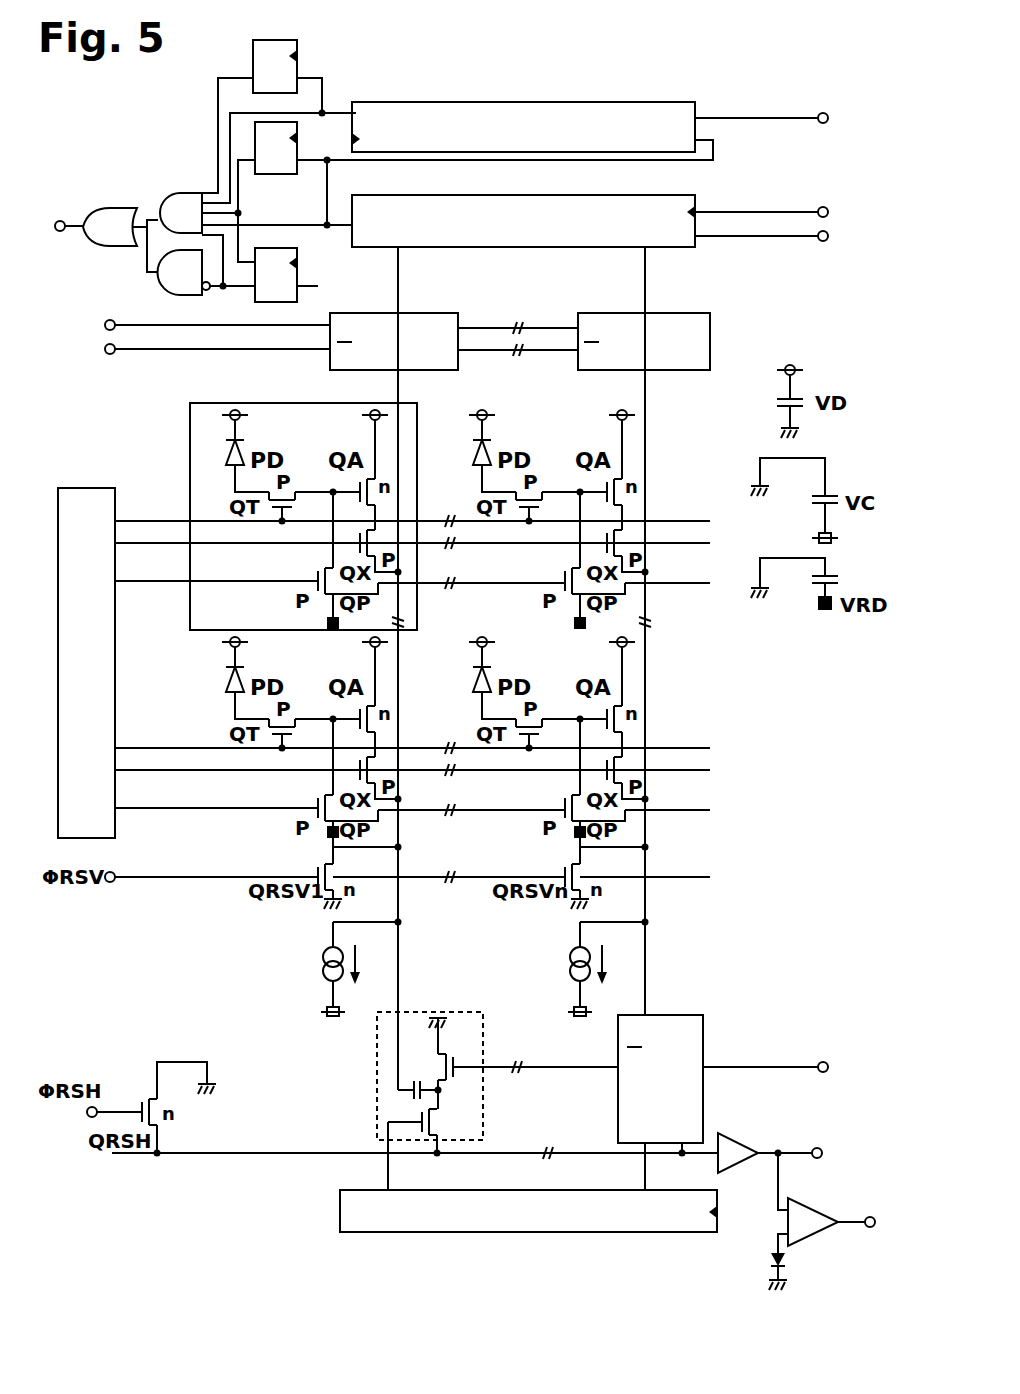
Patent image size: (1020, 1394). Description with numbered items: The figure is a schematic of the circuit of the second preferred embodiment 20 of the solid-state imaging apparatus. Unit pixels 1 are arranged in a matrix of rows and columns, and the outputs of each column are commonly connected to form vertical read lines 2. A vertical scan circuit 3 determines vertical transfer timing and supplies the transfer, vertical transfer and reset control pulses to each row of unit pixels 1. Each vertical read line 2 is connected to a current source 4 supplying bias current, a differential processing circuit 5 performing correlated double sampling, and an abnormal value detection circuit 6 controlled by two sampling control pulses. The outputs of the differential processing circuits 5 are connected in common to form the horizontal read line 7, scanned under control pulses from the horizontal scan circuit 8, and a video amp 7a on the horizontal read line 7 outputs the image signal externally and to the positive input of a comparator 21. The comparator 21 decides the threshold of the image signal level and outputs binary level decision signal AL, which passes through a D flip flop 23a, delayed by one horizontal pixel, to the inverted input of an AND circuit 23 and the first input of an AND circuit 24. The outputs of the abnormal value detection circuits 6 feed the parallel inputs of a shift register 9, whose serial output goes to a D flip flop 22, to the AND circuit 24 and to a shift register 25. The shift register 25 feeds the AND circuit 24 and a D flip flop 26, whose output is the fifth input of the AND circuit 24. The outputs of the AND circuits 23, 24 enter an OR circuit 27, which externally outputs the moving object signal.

The unit pixel 1 is at (417, 403).
The vertical read line 2 is at (417, 448).
The vertical scan circuit 3 is at (112, 488).
The current source 4 is at (322, 962).
The differential processing circuit 5 is at (377, 1085).
The abnormal value detection circuit 6 is at (382, 341).
The horizontal read line 7 is at (245, 1150).
The video amp 7a is at (746, 1146).
The horizontal scan circuit 8 is at (340, 1215).
The shift register 9 is at (650, 195).
The second preferred embodiment 20 is at (358, 104).
The comparator 21 is at (812, 1243).
The D flip flop 22 is at (270, 176).
The AND circuit 23 is at (165, 295).
The D flip flop 23a is at (252, 302).
The AND circuit 24 is at (182, 193).
The shift register 25 is at (645, 102).
The D flip flop 26 is at (285, 40).
The OR circuit 27 is at (104, 208).